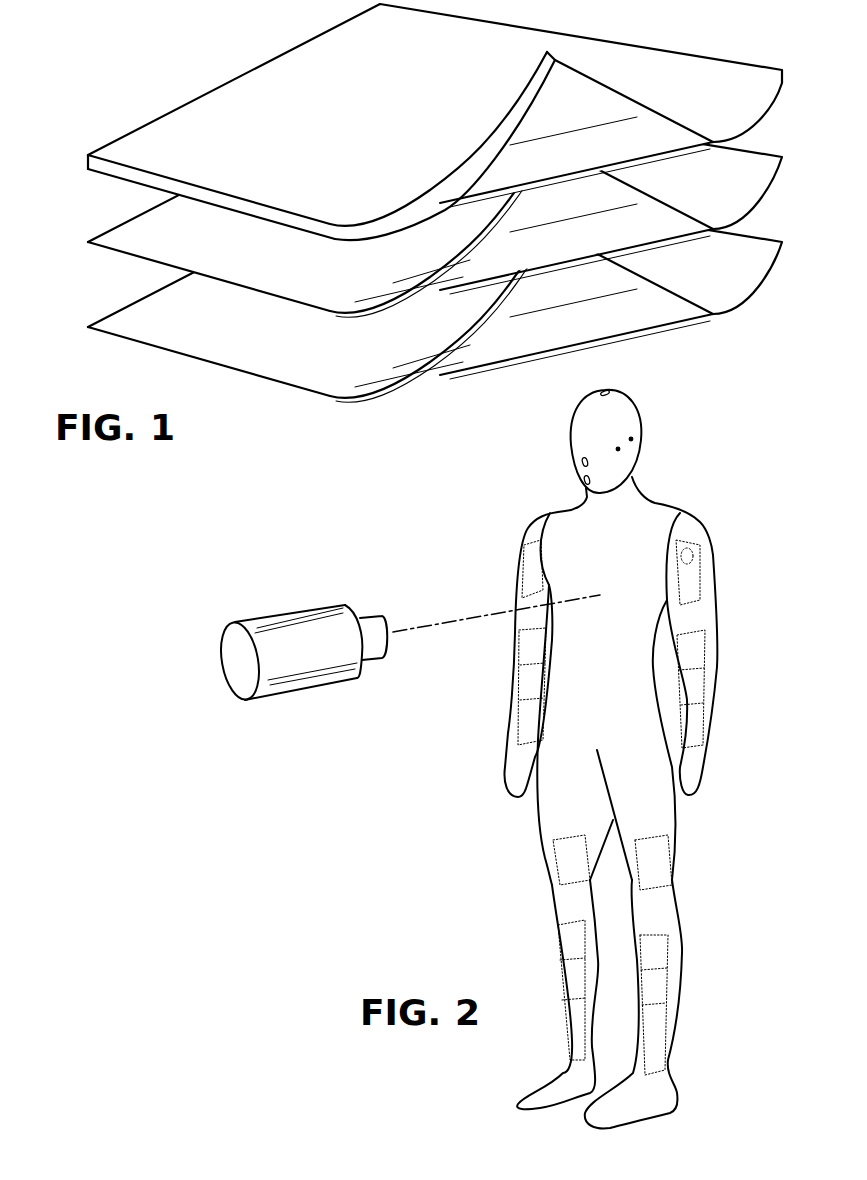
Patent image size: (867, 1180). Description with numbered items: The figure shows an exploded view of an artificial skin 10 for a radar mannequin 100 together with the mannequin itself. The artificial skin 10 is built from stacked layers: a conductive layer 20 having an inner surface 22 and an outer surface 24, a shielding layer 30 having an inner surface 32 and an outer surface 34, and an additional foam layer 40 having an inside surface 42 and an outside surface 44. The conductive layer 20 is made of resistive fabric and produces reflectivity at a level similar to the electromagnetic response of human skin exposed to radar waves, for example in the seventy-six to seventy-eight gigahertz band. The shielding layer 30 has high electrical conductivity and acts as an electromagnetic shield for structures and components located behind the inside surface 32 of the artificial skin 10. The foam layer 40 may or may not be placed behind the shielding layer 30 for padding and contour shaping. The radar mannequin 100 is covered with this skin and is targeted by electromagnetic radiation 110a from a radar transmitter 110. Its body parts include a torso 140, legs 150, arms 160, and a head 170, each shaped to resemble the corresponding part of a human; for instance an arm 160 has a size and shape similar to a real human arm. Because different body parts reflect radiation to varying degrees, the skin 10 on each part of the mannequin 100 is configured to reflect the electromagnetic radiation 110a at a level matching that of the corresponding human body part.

In FIG. 1, the artificial skin 10 is at (659, 33).
In FIG. 1, the conductive layer 20 is at (417, 122).
In FIG. 1, the inner surface of the conductive layer 22 is at (653, 128).
In FIG. 1, the outer surface of the conductive layer 24 is at (203, 128).
In FIG. 1, the shielding layer 30 is at (410, 204).
In FIG. 1, the inner surface of the shielding layer 32 is at (653, 215).
In FIG. 1, the outer surface of the shielding layer 34 is at (173, 230).
In FIG. 1, the foam layer 40 is at (421, 289).
In FIG. 1, the inside surface of the foam layer 42 is at (635, 302).
In FIG. 1, the outside surface of the foam layer 44 is at (200, 337).
In FIG. 2, the radar mannequin 100 is at (633, 744).
In FIG. 2, the radar transmitter 110 is at (276, 615).
In FIG. 2, the electromagnetic radiation 110a is at (437, 623).
In FIG. 2, the torso 140 is at (643, 575).
In FIG. 2, the legs 150 is at (677, 835).
In FIG. 2, the arms 160 is at (713, 707).
In FIG. 2, the head 170 is at (613, 388).